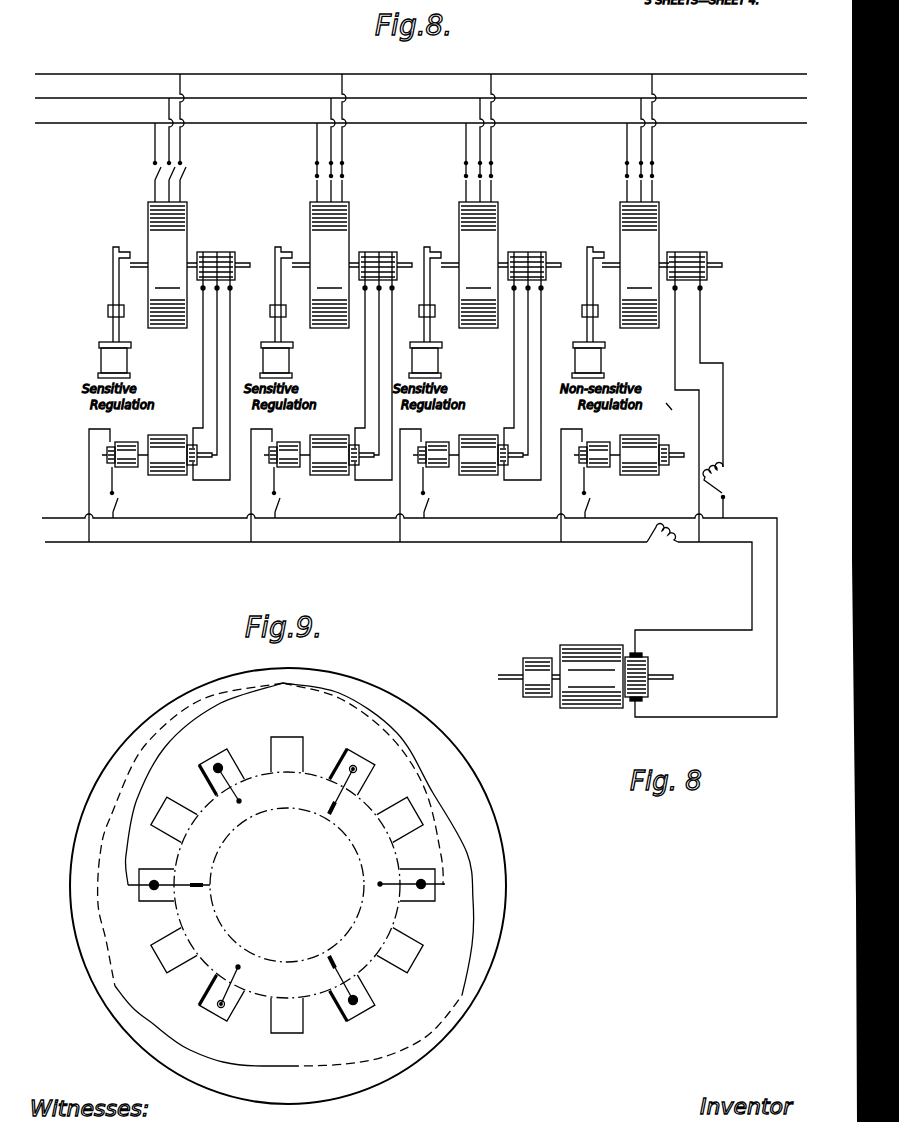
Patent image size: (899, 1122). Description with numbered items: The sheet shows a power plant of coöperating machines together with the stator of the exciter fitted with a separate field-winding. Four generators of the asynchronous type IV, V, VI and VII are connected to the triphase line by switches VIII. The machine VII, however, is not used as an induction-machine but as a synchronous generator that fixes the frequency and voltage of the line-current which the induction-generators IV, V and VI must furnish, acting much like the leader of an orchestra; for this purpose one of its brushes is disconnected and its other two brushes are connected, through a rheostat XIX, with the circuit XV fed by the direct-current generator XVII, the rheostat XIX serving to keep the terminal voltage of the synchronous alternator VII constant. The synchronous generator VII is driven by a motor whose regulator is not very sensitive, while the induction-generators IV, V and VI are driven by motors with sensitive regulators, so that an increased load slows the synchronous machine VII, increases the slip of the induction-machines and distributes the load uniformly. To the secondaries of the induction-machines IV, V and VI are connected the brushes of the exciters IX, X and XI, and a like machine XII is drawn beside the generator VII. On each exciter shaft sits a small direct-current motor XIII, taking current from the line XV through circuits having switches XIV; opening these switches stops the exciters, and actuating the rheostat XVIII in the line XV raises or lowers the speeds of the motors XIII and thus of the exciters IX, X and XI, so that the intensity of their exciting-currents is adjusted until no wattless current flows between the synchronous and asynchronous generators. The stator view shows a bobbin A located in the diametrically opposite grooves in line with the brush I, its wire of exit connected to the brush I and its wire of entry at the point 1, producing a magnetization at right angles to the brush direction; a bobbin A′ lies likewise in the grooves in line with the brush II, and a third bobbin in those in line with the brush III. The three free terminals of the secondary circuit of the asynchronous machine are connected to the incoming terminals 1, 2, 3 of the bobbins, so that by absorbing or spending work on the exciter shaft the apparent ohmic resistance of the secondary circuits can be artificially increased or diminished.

In FIG. 8, the brush I is at (421, 65).
In FIG. 9, the brush I is at (196, 875).
In FIG. 8, the brush II is at (421, 89).
In FIG. 9, the brush II is at (341, 797).
In FIG. 8, the brush III is at (421, 114).
In FIG. 9, the brush III is at (332, 978).
In FIG. 8, the asynchronous generator IV is at (167, 265).
In FIG. 8, the asynchronous generator V is at (329, 265).
In FIG. 8, the asynchronous generator VI is at (478, 265).
In FIG. 8, the synchronous generator VII is at (639, 265).
In FIG. 8, the switches VIII is at (416, 172).
In FIG. 8, the exciter IX is at (180, 455).
In FIG. 8, the exciter X is at (342, 455).
In FIG. 8, the exciter XI is at (491, 455).
In FIG. 8, the regulating motor XII is at (652, 455).
In FIG. 8, the direct-current motor XIII is at (361, 446).
In FIG. 8, the switches XIV is at (363, 504).
In FIG. 8, the circuit XV is at (409, 608).
In FIG. 8, the direct-current generator XVII is at (585, 676).
In FIG. 8, the rheostat XVIII is at (661, 551).
In FIG. 8, the rheostat XIX is at (729, 490).
In FIG. 9, the bobbin A is at (286, 885).
In FIG. 9, the bobbin A′ is at (178, 1004).
In FIG. 9, the incoming terminal 1 is at (375, 885).
In FIG. 9, the incoming terminal 2 is at (235, 980).
In FIG. 9, the incoming terminal 3 is at (234, 789).